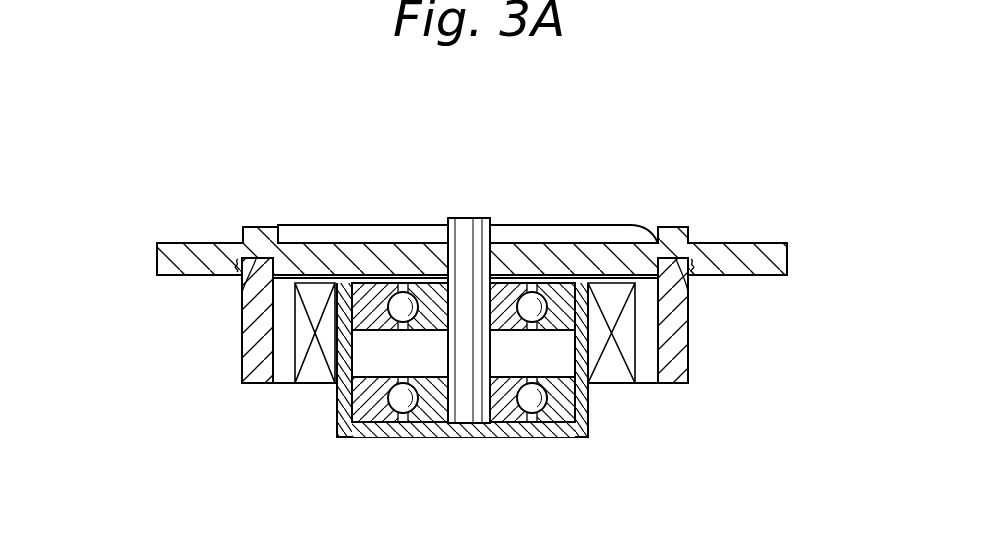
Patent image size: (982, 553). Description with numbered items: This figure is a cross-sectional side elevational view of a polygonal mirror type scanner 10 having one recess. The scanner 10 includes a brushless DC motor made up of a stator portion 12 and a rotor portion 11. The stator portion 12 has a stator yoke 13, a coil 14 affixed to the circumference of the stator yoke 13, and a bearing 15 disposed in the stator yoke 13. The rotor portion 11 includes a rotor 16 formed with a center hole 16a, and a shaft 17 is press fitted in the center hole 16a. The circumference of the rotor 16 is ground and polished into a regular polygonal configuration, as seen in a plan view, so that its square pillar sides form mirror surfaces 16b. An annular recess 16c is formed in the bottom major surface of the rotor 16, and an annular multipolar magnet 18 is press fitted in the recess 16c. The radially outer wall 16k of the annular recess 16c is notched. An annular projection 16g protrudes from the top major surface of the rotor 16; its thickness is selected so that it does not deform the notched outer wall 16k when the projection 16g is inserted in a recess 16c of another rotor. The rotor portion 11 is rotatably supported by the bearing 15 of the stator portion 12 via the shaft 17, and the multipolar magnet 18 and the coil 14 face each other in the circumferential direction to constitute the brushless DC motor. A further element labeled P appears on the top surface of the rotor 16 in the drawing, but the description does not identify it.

The scanner 10 is at (763, 141).
The rotor portion 11 is at (578, 226).
The stator portion 12 is at (515, 437).
The stator yoke 13 is at (430, 437).
The coil 14 is at (305, 387).
The bearing 15 is at (375, 430).
The rotor 16 is at (634, 228).
The center hole 16a is at (464, 228).
The mirror surfaces 16b is at (157, 253).
The annular recess 16c is at (250, 300).
The annular projection 16g is at (262, 226).
The radially outer wall 16k is at (242, 293).
The shaft 17 is at (483, 218).
The annular multipolar magnet 18 is at (242, 373).
The plate P is at (360, 241).